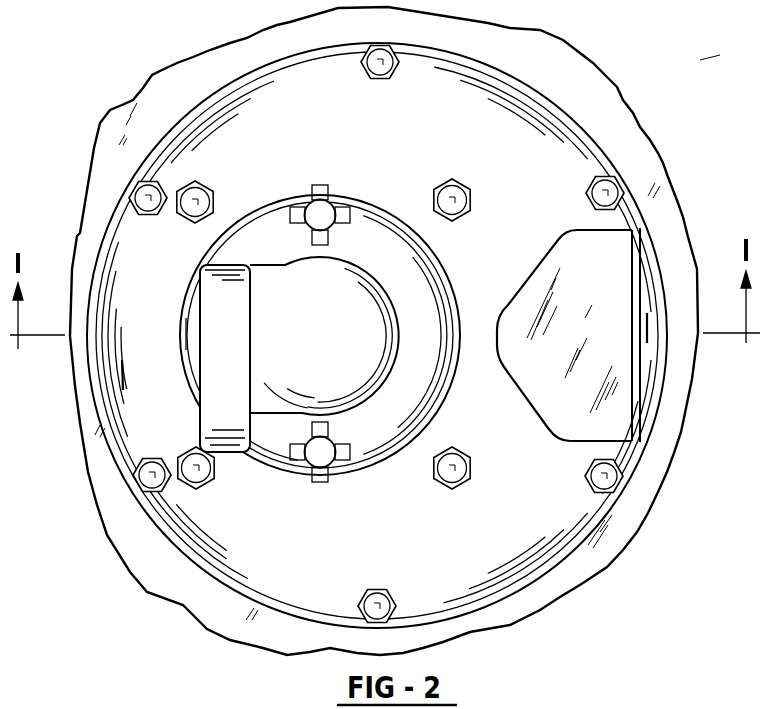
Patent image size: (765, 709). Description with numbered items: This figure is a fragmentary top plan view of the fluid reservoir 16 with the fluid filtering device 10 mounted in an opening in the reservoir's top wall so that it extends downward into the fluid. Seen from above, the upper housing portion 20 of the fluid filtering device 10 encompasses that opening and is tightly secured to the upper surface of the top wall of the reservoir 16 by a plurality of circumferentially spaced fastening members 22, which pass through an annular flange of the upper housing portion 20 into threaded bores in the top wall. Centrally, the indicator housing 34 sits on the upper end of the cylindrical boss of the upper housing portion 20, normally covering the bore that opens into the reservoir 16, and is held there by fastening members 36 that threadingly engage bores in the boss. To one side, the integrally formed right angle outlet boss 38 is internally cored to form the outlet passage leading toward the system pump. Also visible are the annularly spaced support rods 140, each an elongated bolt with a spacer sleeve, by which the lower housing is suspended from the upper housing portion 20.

The fluid filtering device 10 is at (223, 78).
The fluid reservoir 16 is at (180, 613).
The upper housing portion 20 is at (182, 554).
The fastening members 22 is at (393, 76).
The indicator housing 34 is at (455, 282).
The fastening members 36 is at (337, 206).
The right angle outlet boss 38 is at (625, 221).
The support rods 140 is at (213, 185).